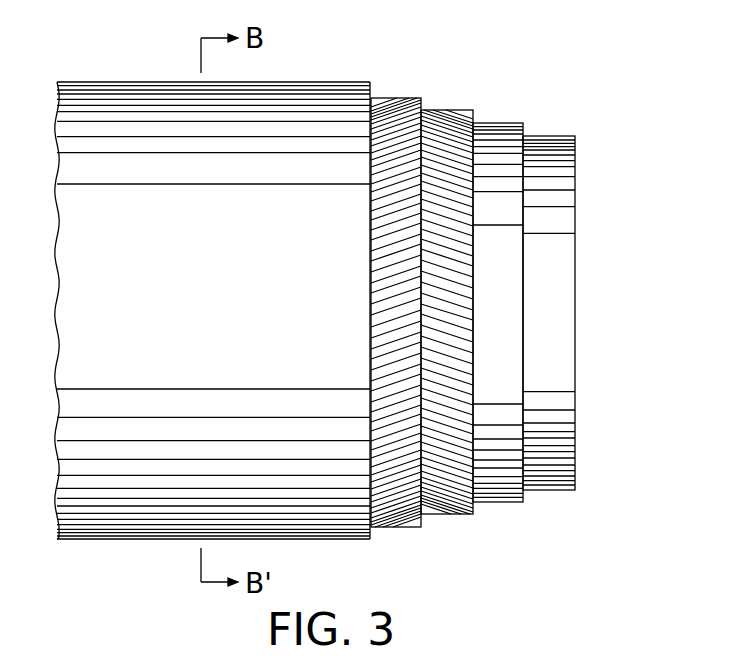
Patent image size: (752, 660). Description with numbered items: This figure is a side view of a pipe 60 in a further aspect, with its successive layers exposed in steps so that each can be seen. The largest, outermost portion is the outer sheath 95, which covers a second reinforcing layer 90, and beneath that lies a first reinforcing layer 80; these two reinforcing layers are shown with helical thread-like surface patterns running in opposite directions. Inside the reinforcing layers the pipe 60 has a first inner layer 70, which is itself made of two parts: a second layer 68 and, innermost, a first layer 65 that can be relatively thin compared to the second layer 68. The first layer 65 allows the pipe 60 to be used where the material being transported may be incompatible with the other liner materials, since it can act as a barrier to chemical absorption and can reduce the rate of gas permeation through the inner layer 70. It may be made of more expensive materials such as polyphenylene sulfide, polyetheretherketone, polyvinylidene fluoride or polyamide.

The pipe 60 is at (382, 316).
The first layer 65 is at (575, 287).
The second layer 68 is at (505, 502).
The first inner layer 70 is at (559, 360).
The first reinforcing layer 80 is at (453, 120).
The second reinforcing layer 90 is at (402, 108).
The outer sheath 95 is at (327, 97).